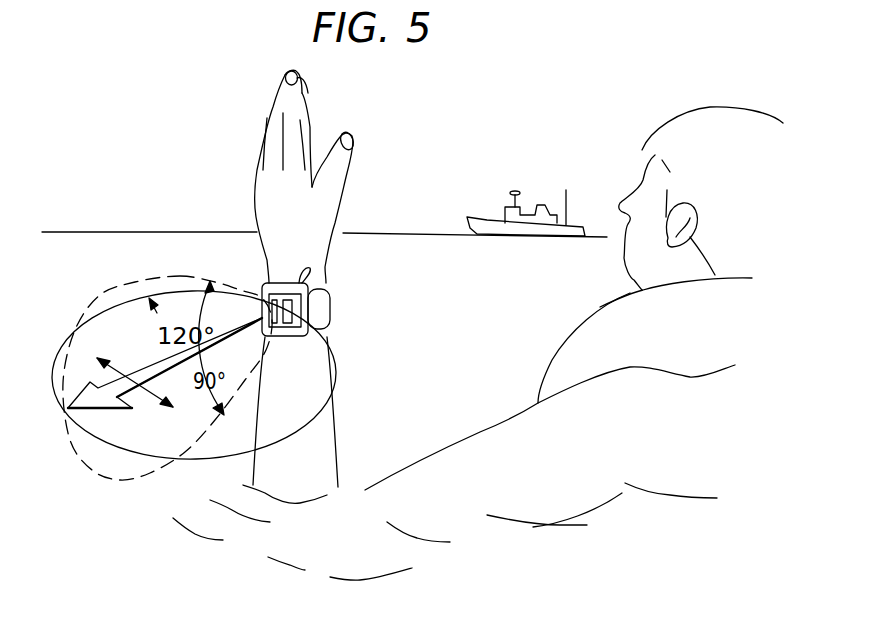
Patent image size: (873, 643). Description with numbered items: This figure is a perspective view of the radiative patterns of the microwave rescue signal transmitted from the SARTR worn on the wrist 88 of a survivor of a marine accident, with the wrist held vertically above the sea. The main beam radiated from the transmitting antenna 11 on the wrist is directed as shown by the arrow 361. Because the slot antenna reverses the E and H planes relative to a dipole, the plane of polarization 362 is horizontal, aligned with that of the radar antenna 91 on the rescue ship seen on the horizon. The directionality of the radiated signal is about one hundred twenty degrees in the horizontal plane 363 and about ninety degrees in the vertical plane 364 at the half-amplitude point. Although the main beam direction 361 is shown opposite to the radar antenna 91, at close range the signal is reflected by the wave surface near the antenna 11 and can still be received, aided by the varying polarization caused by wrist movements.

The transmitting antenna 11 is at (263, 284).
The wrist 88 is at (323, 262).
The radar antenna 91 is at (528, 188).
The arrow indicating main beam direction 361 is at (118, 410).
The plane of polarization 362 is at (127, 372).
The horizontal plane 363 is at (99, 440).
The vertical plane 364 is at (105, 296).